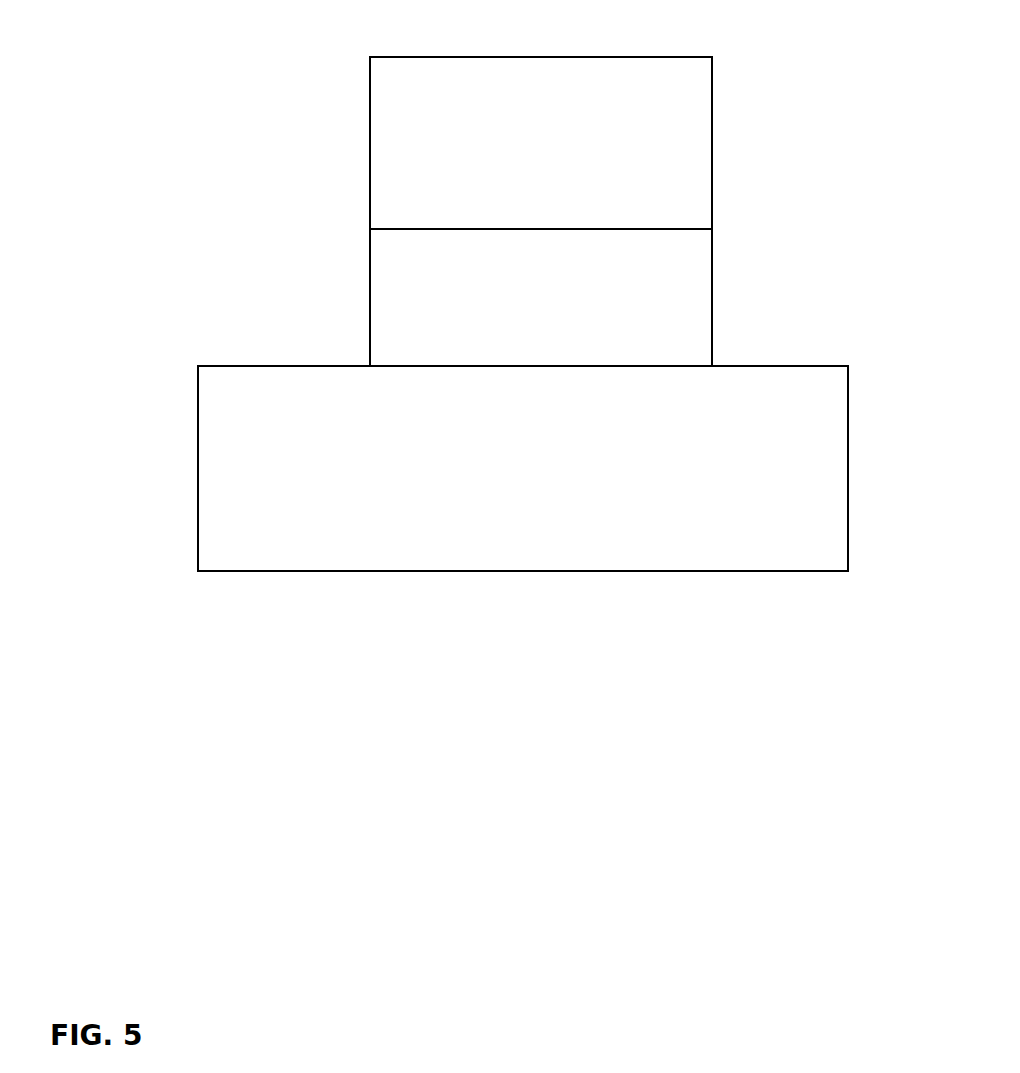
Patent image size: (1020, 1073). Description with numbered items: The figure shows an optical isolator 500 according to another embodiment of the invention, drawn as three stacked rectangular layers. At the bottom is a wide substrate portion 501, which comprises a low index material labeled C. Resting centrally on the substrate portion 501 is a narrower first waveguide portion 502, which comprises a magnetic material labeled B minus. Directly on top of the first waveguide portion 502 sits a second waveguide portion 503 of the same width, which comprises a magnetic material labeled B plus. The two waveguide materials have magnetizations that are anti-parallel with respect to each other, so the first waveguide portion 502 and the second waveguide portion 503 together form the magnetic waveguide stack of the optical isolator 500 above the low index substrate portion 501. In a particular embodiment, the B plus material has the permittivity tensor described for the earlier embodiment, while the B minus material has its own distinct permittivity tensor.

The optical isolator 500 is at (563, 719).
The substrate portion 501 is at (862, 486).
The first waveguide portion 502 is at (726, 298).
The second waveguide portion 503 is at (725, 160).